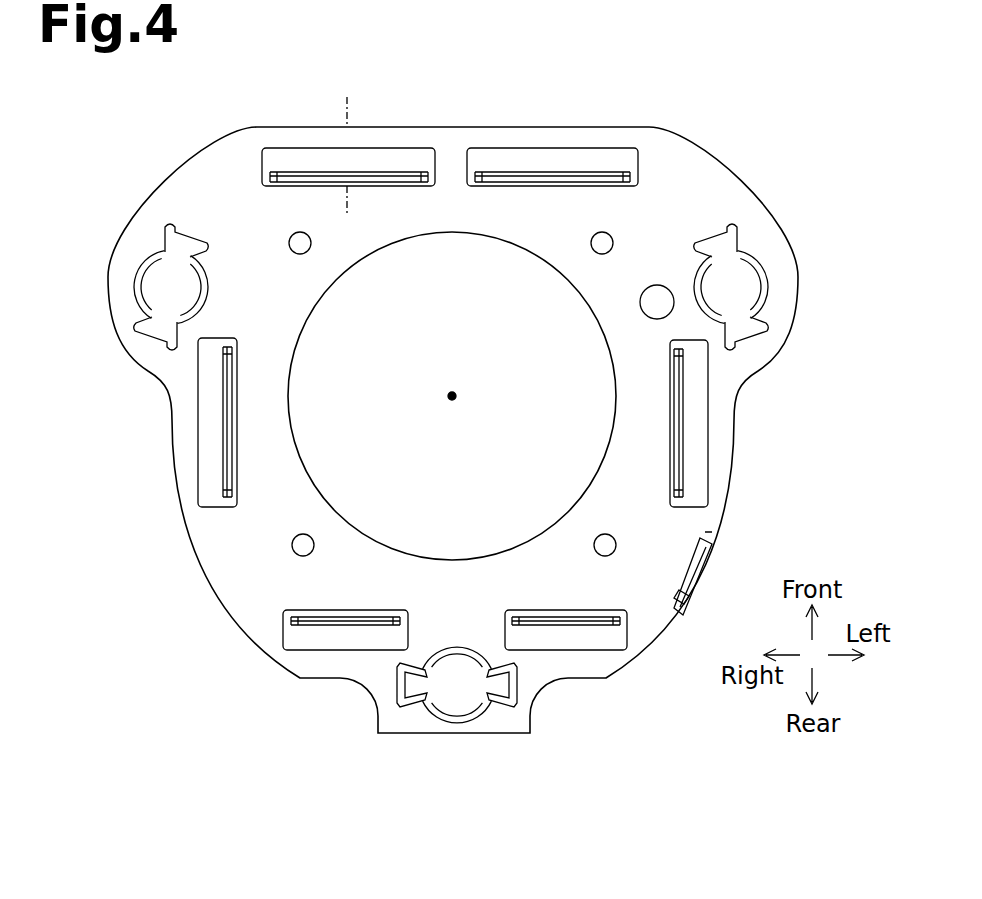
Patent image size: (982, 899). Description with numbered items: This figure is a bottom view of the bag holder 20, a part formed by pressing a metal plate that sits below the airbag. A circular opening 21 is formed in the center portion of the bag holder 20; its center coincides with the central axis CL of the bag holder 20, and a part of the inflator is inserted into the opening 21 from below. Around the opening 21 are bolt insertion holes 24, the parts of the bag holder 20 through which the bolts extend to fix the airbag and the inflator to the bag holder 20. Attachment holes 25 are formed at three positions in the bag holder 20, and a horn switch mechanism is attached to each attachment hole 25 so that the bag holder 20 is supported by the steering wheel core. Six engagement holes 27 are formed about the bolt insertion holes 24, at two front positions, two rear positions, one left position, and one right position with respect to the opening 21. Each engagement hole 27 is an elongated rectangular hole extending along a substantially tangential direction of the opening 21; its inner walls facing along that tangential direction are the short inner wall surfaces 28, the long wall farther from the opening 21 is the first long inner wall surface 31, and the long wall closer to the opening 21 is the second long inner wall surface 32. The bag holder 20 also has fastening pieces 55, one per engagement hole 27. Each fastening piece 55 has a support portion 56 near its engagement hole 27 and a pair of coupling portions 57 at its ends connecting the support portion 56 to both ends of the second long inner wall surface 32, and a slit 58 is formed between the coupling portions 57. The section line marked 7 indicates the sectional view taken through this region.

The bag holder 20 is at (732, 190).
The opening 21 is at (574, 292).
The bolt insertion holes 24 is at (292, 246).
The attachment holes 25 is at (150, 296).
The engagement holes 27 is at (378, 80).
The short inner wall surfaces 28 is at (472, 150).
The first long inner wall surface 31 is at (398, 148).
The second long inner wall surface 32 is at (393, 182).
The fastening pieces 55 is at (231, 86).
The support portion 56 is at (262, 148).
The coupling portions 57 is at (272, 188).
The slit 58 is at (453, 398).
The section line VII-VII 7 is at (347, 97).
The central axis CL is at (452, 396).